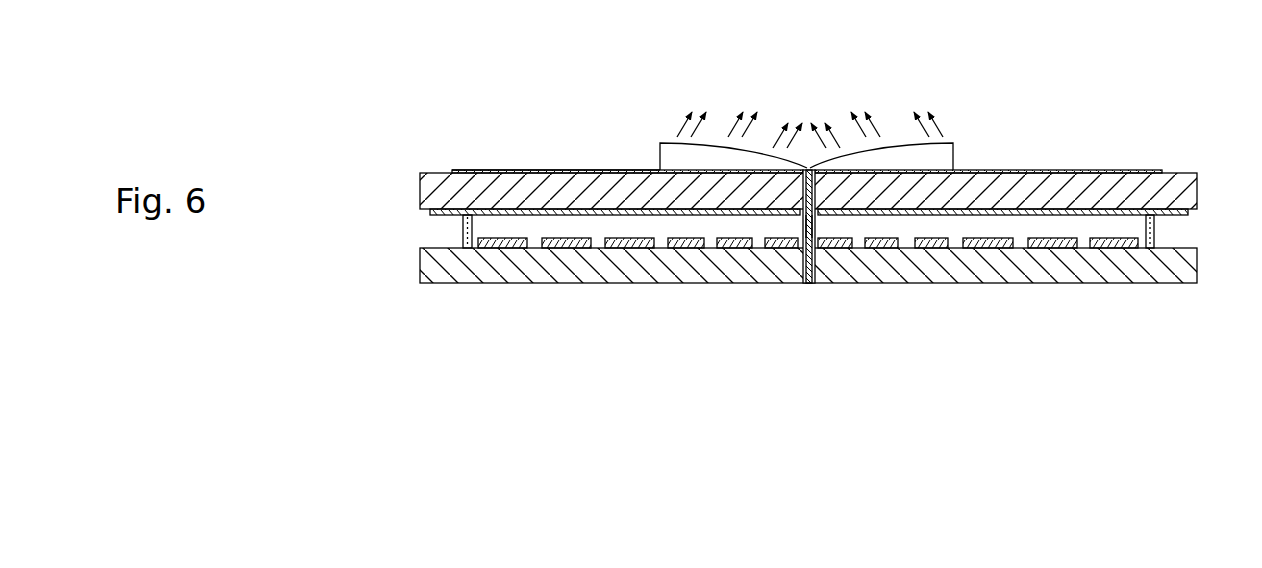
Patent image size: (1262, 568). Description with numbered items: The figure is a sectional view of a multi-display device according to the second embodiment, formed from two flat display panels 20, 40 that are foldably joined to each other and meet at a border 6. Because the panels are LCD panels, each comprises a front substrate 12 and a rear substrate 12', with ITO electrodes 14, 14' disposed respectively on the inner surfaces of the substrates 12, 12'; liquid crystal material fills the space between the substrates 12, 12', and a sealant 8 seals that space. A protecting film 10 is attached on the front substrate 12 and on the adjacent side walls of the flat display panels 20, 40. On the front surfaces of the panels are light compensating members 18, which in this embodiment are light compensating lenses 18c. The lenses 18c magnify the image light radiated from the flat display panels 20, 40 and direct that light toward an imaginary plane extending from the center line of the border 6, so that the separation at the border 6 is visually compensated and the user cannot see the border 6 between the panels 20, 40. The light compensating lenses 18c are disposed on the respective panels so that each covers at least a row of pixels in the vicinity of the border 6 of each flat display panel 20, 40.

The border 6 is at (813, 298).
The sealant 8 is at (817, 232).
The protecting film 10 is at (492, 170).
The front substrate 12 is at (772, 191).
The rear substrate 12' is at (808, 304).
The ITO electrode 14 is at (770, 215).
The ITO electrode 14' is at (749, 240).
The light compensating member 18 is at (945, 133).
The light compensating lens 18c is at (900, 153).
The flat display panel 20 is at (628, 153).
The flat display panel 40 is at (985, 153).